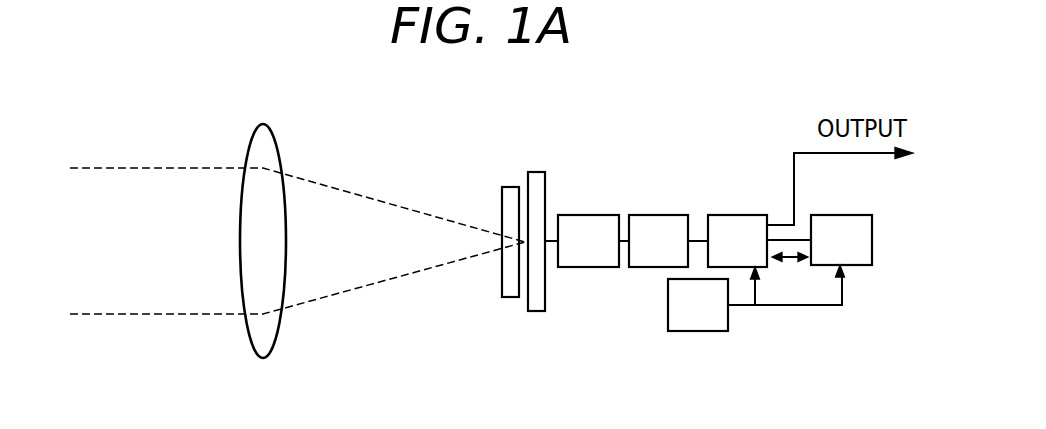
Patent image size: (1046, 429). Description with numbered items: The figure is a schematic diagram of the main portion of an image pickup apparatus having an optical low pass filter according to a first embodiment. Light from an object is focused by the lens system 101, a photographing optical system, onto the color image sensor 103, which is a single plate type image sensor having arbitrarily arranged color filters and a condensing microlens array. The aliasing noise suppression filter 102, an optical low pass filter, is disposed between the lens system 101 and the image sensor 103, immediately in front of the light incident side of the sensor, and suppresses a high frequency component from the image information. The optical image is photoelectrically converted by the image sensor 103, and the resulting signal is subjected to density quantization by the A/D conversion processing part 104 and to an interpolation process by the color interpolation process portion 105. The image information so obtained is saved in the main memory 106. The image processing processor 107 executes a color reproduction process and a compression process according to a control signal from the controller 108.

The lens system 101 is at (266, 124).
The aliasing noise suppression filter 102 is at (510, 187).
The color image sensor 103 is at (536, 172).
The A/D conversion processing part 104 is at (605, 215).
The color interpolation process portion 105 is at (673, 215).
The main memory 106 is at (753, 215).
The image processing processor 107 is at (852, 215).
The controller 108 is at (692, 331).